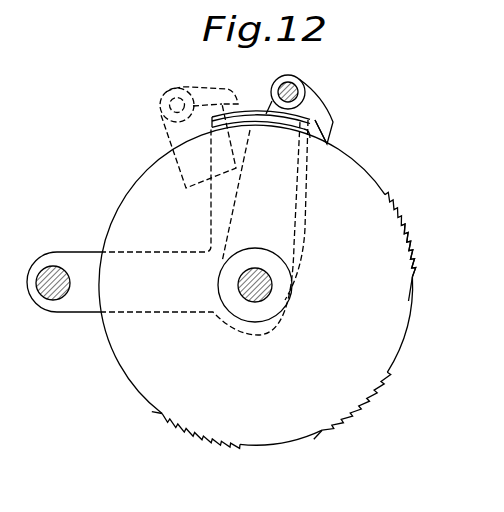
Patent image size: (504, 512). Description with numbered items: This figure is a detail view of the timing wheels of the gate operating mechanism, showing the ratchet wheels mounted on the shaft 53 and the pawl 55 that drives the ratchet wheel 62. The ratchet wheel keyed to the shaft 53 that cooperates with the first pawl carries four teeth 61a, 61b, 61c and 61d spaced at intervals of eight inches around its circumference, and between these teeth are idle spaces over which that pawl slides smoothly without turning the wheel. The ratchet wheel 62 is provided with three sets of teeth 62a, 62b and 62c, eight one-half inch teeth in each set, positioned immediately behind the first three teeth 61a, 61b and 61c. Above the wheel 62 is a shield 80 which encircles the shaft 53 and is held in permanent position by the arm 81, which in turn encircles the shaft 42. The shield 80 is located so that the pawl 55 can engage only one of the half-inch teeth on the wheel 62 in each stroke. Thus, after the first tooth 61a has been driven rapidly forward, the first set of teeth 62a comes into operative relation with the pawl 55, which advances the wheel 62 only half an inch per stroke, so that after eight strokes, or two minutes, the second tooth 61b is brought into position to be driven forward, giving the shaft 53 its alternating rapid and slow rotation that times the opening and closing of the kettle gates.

The shaft 42 is at (47, 267).
The shaft 53 is at (249, 269).
The pawl 55 is at (320, 107).
The first tooth 61a is at (156, 415).
The second tooth 61b is at (321, 434).
The third tooth 61c is at (414, 290).
The fourth tooth 61d is at (328, 143).
The ratchet wheel 62 is at (363, 188).
The first set of teeth 62a is at (201, 441).
The second set of teeth 62b is at (360, 401).
The third set of teeth 62c is at (427, 249).
The shield 80 is at (241, 114).
The arm 81 is at (167, 227).